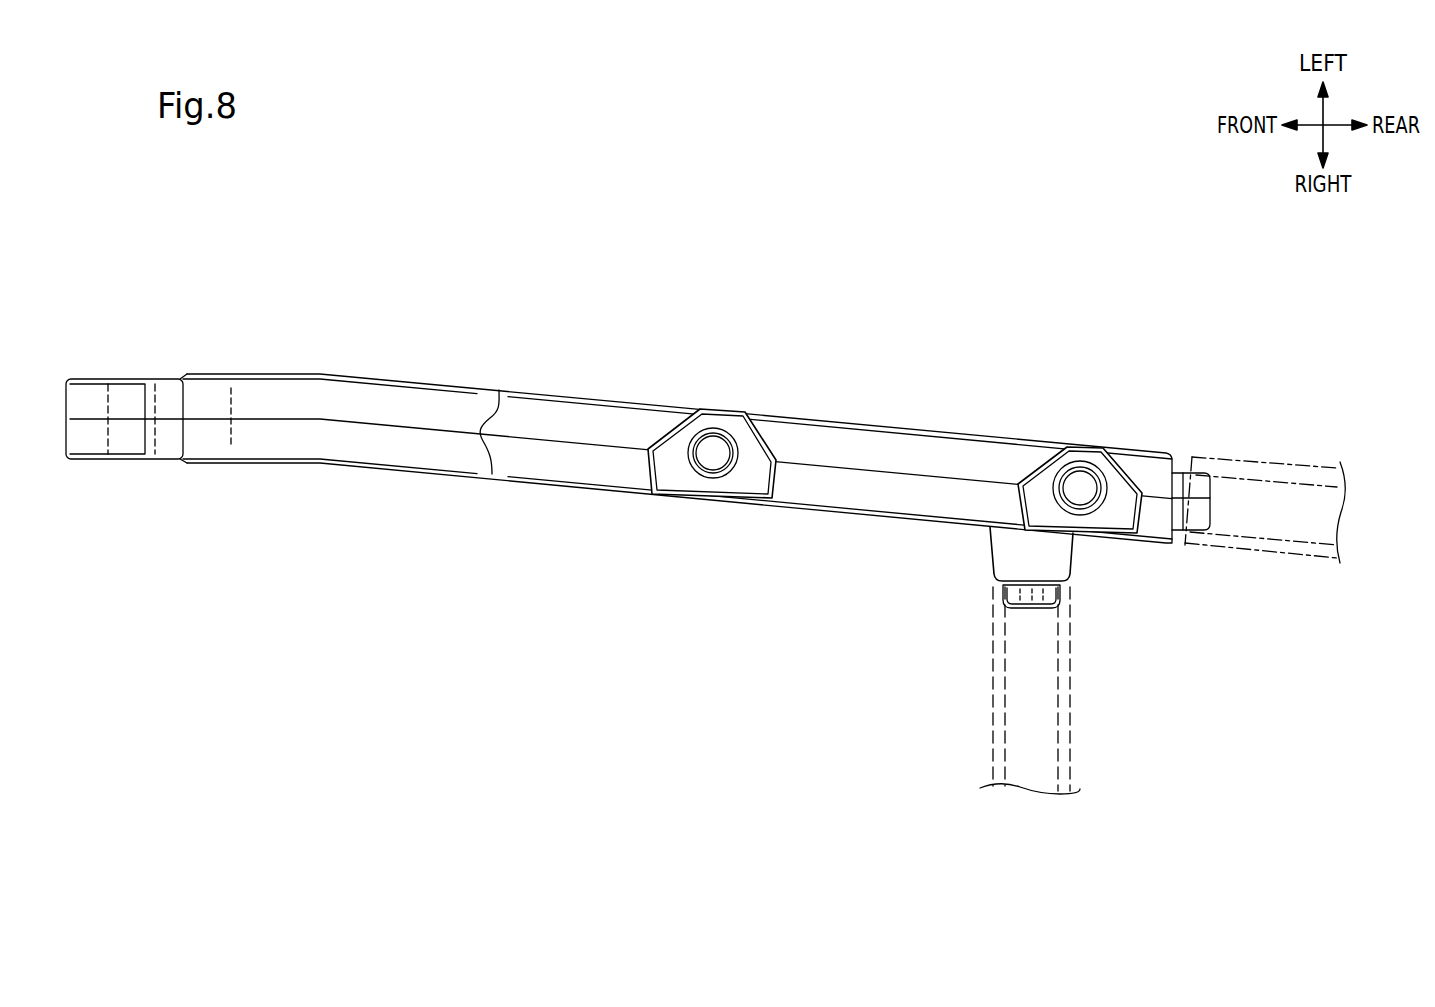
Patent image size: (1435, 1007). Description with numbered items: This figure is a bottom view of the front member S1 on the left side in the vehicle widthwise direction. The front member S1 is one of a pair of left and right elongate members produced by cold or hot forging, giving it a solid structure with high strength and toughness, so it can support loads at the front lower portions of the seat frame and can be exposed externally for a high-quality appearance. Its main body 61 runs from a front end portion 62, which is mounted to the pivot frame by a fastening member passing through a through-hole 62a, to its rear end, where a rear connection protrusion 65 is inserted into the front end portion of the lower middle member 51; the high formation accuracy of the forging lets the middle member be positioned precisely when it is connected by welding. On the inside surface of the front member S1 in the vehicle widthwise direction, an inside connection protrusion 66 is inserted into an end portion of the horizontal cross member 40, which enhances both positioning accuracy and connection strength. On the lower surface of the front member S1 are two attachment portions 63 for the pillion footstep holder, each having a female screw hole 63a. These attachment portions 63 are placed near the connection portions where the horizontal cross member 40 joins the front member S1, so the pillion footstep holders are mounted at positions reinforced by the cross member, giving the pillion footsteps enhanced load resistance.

The front member S1 is at (640, 360).
The frame body 61 is at (920, 458).
The front end portion 62 is at (87, 398).
The through-hole 62a is at (108, 397).
The attachment portion 63 is at (678, 484).
The female screw hole 63a is at (712, 462).
The rear connection protrusion 65 is at (1200, 497).
The lower middle member 51 is at (1270, 463).
The inside connection protrusion 66 is at (1028, 604).
The horizontal cross member 40 is at (1072, 687).